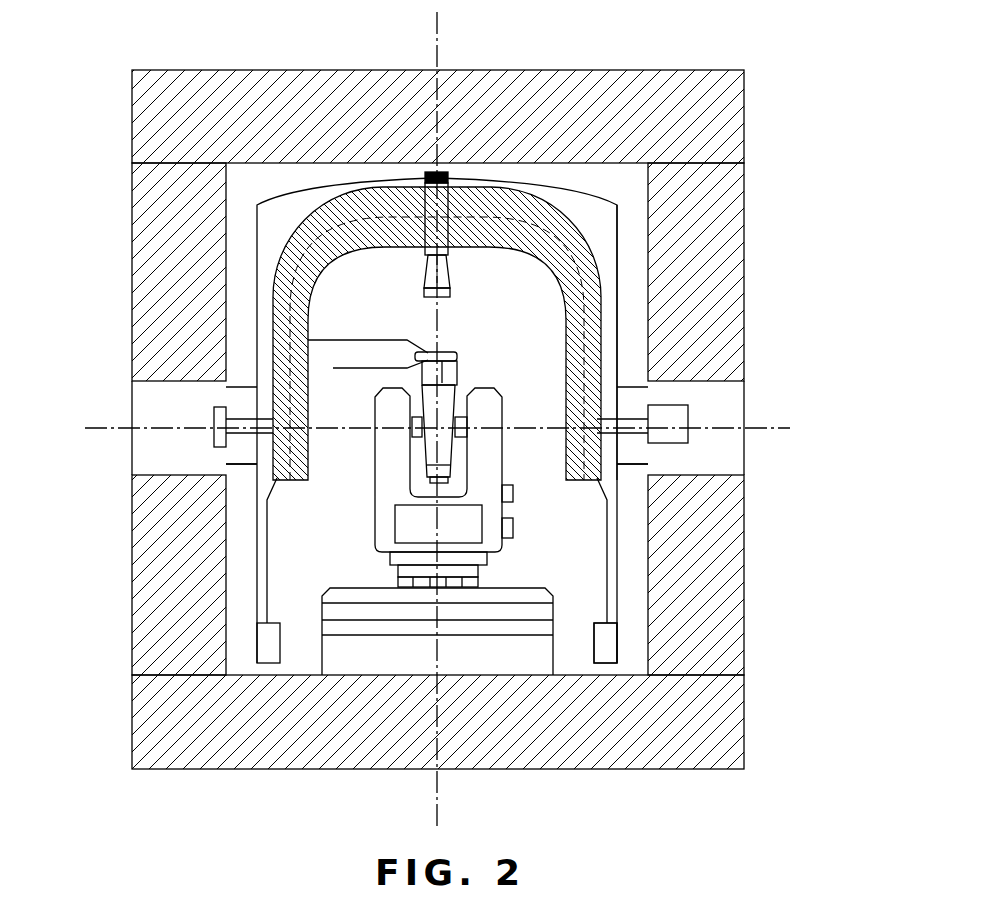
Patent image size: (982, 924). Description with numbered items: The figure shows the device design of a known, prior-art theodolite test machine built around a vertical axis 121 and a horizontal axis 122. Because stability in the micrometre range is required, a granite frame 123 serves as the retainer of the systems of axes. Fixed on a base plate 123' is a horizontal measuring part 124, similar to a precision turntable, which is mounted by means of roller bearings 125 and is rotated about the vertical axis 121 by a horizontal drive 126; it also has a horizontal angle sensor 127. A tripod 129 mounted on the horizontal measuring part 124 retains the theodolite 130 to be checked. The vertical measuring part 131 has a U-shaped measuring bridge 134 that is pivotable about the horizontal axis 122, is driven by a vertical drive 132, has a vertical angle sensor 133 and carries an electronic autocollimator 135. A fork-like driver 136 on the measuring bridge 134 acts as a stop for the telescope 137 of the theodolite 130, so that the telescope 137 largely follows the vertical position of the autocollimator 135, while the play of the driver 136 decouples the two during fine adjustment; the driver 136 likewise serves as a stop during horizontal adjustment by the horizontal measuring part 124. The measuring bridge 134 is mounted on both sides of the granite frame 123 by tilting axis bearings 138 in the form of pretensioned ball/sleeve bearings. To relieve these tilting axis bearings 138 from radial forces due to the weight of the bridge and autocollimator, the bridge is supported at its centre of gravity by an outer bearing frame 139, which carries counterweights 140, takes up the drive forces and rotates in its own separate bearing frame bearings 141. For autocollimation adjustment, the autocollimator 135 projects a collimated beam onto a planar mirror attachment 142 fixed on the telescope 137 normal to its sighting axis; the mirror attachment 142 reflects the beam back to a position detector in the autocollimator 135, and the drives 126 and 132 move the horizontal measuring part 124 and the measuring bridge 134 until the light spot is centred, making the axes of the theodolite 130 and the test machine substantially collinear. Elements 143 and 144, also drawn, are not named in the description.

The vertical axis 121 is at (437, 30).
The horizontal axis 122 is at (112, 426).
The granite frame 123 is at (491, 365).
The base plate 123' is at (495, 722).
The horizontal measuring part 124 is at (583, 632).
The roller bearings 125 is at (343, 628).
The horizontal drive 126 is at (343, 655).
The horizontal angle sensor 127 is at (343, 613).
The tripod 129 is at (478, 577).
The theodolite 130 is at (556, 518).
The vertical measuring part 131 is at (637, 303).
The vertical drive 132 is at (631, 429).
The vertical angle sensor 133 is at (219, 416).
The measuring bridge 134 is at (280, 273).
The electronic autocollimator 135 is at (442, 273).
The fork-like driver 136 is at (372, 354).
The telescope 137 is at (392, 484).
The tilting axis bearings 138 is at (243, 430).
The outer bearing frame 139 is at (277, 217).
The counterweights 140 is at (608, 650).
The bearing frame bearings 141 is at (243, 462).
The planar mirror attachment 142 is at (457, 355).
The leveling feet 143 is at (398, 583).
The base plate 144 is at (403, 558).